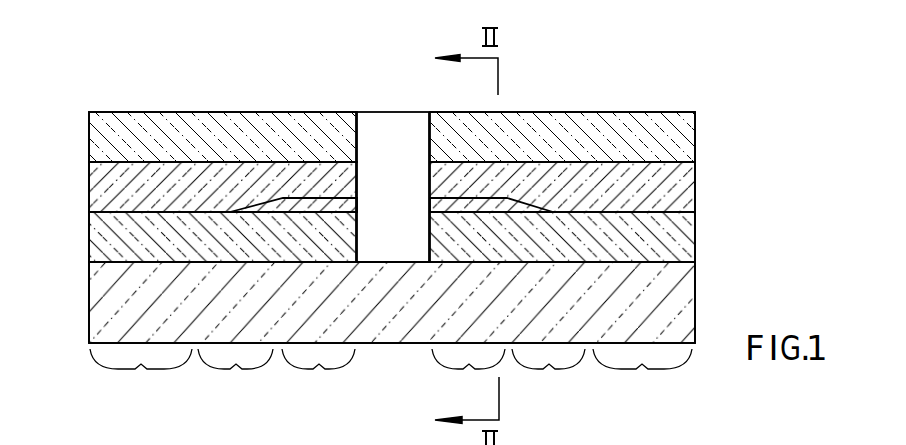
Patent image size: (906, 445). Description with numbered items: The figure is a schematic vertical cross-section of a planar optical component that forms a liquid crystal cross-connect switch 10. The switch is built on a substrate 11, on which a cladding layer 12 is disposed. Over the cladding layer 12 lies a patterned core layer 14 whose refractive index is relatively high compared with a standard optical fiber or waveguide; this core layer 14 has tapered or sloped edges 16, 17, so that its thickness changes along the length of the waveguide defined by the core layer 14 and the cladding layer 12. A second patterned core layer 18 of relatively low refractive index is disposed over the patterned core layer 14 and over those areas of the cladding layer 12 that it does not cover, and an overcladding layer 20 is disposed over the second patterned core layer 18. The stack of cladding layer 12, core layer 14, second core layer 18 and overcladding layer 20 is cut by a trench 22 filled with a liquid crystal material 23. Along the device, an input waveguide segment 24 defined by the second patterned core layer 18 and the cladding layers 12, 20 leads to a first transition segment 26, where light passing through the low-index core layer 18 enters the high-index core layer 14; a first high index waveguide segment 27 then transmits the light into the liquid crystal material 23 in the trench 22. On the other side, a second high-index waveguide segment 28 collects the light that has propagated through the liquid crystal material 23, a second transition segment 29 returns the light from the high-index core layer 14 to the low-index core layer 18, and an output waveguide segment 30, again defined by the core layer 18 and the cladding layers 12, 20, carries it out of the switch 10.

The liquid crystal cross-connect switch 10 is at (80, 57).
The substrate 11 is at (89, 298).
The cladding layer 12 is at (89, 238).
The patterned core layer 14 is at (310, 198).
The tapered or sloped edge 16 is at (256, 206).
The tapered or sloped edge 17 is at (535, 205).
The second patterned core layer 18 is at (89, 178).
The overcladding layer 20 is at (192, 112).
The trench 22 is at (381, 257).
The liquid crystal material 23 is at (396, 112).
The input waveguide segment 24 is at (141, 377).
The first transition segment 26 is at (235, 377).
The first high index waveguide segment 27 is at (318, 377).
The second high-index waveguide segment 28 is at (468, 377).
The second transition segment 29 is at (548, 377).
The output waveguide segment 30 is at (642, 377).